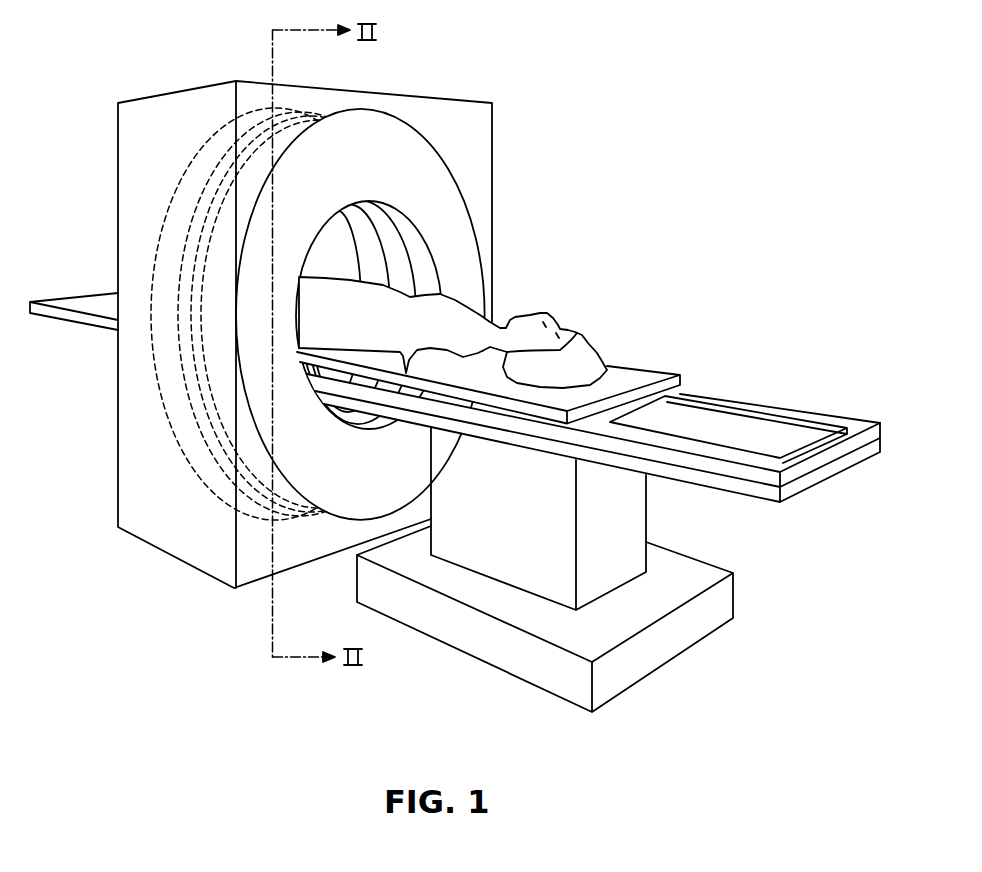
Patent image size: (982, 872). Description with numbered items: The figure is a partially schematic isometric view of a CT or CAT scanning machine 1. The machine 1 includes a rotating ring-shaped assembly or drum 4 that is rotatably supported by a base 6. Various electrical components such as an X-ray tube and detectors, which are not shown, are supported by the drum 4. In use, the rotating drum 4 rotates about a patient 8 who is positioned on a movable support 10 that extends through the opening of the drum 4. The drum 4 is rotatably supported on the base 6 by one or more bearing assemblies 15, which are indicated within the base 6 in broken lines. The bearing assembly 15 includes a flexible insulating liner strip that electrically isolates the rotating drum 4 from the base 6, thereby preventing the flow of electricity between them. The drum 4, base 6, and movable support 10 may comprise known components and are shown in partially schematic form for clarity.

The CT scanning machine 1 is at (352, 318).
The rotating ring-shaped assembly or drum 4 is at (375, 133).
The base 6 is at (180, 547).
The patient 8 is at (497, 315).
The movable support 10 is at (626, 368).
The bearing assembly 15 is at (260, 113).